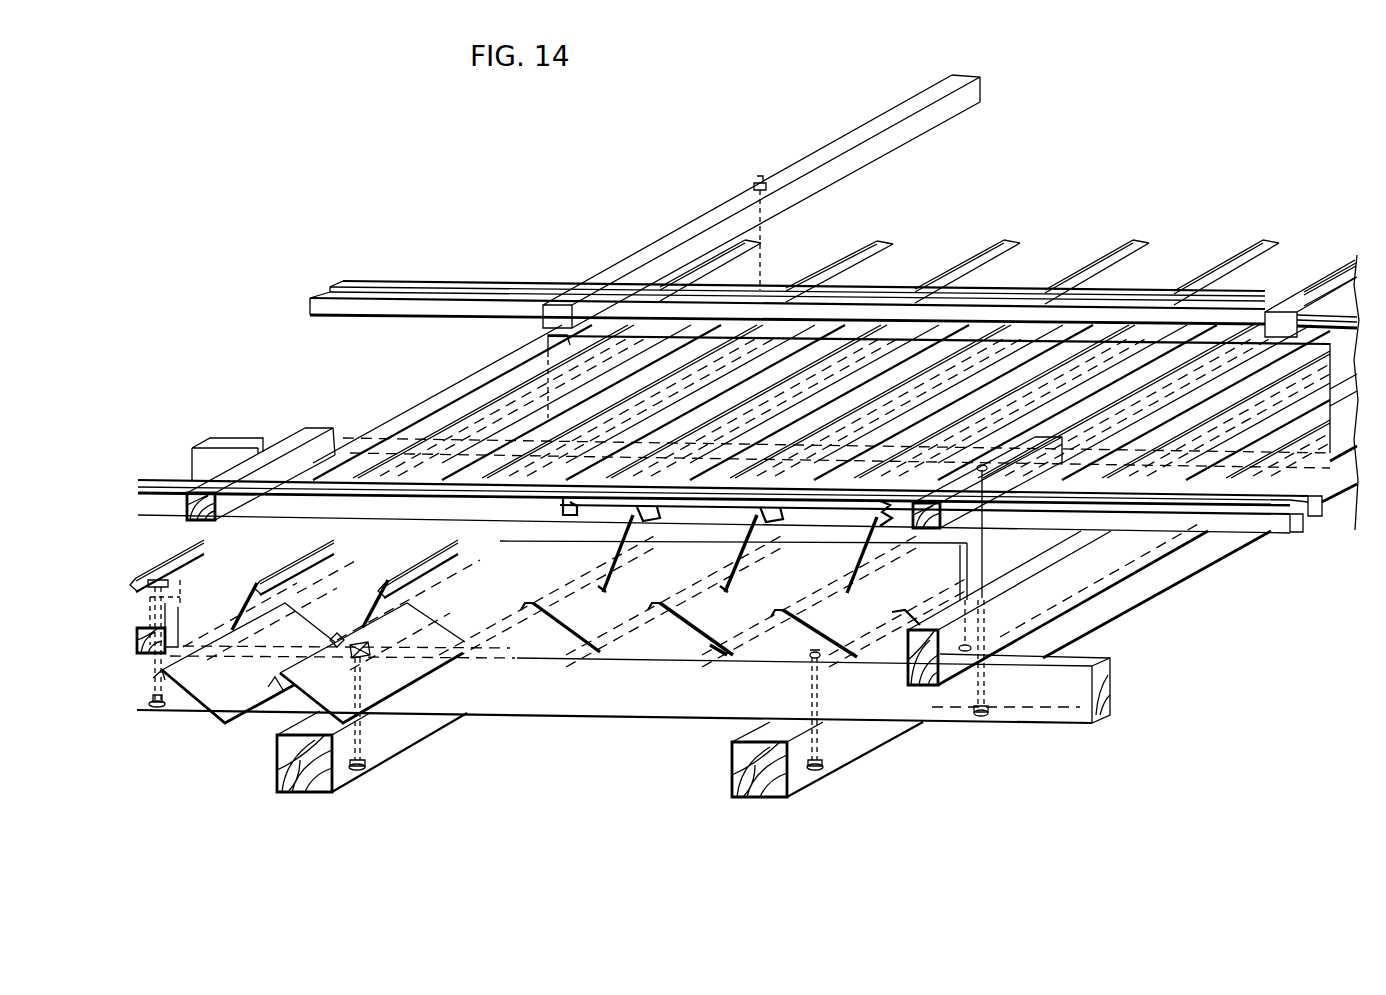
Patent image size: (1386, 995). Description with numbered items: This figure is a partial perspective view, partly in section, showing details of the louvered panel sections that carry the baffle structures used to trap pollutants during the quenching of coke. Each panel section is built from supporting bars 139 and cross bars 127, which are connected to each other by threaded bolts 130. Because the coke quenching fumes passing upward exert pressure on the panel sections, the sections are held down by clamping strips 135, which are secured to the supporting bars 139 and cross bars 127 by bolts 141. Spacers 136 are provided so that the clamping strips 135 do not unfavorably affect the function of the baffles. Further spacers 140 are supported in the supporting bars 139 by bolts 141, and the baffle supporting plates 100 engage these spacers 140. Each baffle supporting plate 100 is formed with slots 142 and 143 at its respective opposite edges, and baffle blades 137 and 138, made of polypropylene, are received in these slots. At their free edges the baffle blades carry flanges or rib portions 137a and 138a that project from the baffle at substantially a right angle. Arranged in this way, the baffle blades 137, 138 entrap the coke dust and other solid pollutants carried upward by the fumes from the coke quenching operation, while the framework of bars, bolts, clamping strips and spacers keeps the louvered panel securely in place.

The baffle supporting plate 100 is at (547, 345).
The cross bar 127 is at (337, 788).
The threaded bolt 130 is at (362, 735).
The clamping strip 135 is at (905, 106).
The spacer 136 is at (375, 293).
The baffle blade 137 is at (623, 560).
The flange or rib portion 137a is at (727, 510).
The baffle blade 138 is at (566, 627).
The flange or rib portion 138a is at (702, 609).
The supporting bar 139 is at (577, 688).
The spacer 140 is at (1073, 615).
The bolt 141 is at (762, 233).
The slot 142 is at (598, 586).
The slot 143 is at (462, 657).